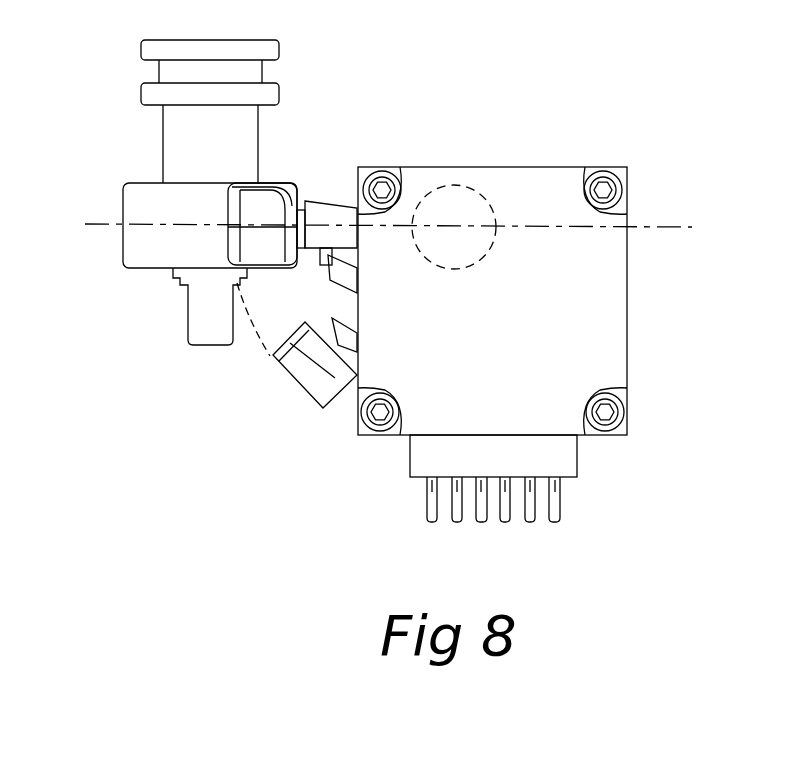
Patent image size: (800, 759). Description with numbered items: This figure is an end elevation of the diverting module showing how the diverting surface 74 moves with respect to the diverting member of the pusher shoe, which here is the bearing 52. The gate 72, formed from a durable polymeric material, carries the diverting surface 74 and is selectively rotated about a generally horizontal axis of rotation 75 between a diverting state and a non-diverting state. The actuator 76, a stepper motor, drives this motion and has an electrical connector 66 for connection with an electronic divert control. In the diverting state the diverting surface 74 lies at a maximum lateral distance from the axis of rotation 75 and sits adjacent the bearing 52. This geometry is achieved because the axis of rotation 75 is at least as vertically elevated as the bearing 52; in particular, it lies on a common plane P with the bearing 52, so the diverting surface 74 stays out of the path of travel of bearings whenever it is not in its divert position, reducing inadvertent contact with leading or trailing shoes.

The bearing 52 is at (128, 183).
The diverting surface 74 is at (230, 186).
The generally horizontal axis of rotation 75 is at (308, 322).
The actuator 76 is at (627, 313).
The gate 72 is at (326, 410).
The electrical connector 66 is at (577, 470).
The common plane P is at (655, 227).